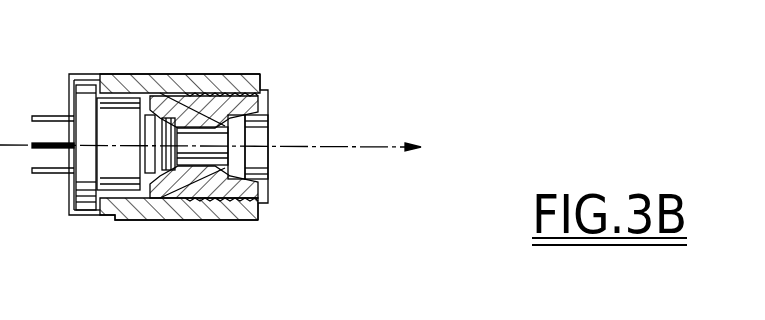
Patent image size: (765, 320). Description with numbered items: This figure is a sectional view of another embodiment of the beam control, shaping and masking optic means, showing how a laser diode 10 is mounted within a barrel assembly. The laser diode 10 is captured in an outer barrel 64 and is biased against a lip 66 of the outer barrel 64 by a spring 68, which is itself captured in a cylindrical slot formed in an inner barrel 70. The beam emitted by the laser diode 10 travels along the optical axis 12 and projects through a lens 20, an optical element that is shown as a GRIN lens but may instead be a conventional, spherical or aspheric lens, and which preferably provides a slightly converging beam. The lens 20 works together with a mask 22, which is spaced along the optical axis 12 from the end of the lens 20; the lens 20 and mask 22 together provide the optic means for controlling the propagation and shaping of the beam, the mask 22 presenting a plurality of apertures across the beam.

The laser diode 10 is at (117, 123).
The optical axis 12 is at (374, 147).
The lens 20 is at (198, 140).
The mask 22 is at (256, 88).
The outer barrel 64 is at (223, 220).
The lip 66 is at (78, 86).
The spring 68 is at (153, 107).
The inner barrel 70 is at (268, 196).